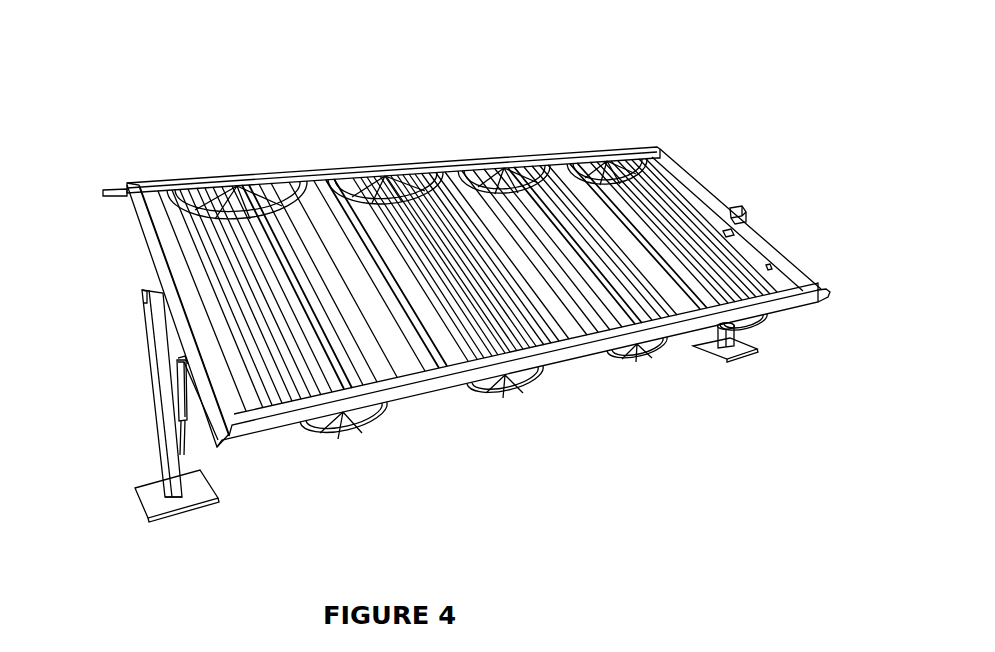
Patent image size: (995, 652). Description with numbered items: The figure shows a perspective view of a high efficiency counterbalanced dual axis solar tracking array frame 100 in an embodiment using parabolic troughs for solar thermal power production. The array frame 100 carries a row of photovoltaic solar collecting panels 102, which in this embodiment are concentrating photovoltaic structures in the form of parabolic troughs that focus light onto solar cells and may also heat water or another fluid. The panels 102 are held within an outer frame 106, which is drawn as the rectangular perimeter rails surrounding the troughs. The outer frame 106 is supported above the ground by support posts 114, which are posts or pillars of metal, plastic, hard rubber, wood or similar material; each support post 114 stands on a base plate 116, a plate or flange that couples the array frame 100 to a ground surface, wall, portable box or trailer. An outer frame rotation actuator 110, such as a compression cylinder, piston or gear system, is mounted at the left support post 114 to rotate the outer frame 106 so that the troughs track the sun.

The high efficiency counterbalanced dual axis solar tracking array frame 100 is at (511, 107).
The photovoltaic solar collecting panel 102 is at (310, 198).
The outer frame 106 is at (650, 147).
The outer frame rotation actuator 110 is at (183, 411).
The support post 114 is at (153, 378).
The base plate 116 is at (137, 504).